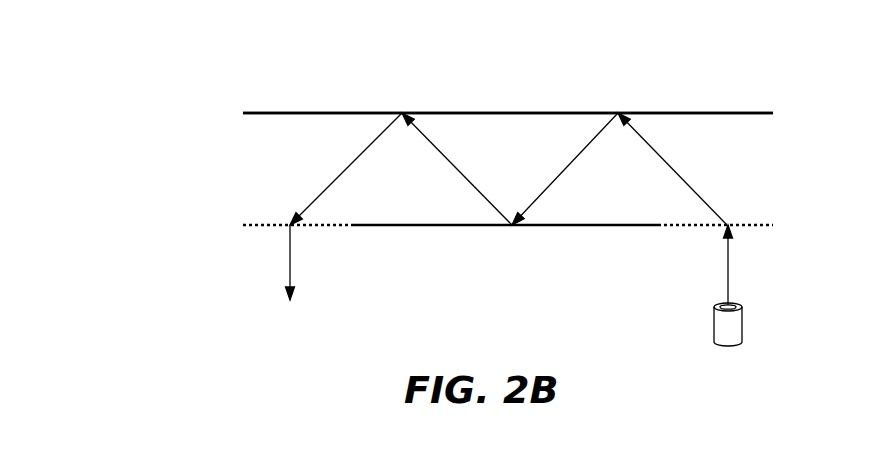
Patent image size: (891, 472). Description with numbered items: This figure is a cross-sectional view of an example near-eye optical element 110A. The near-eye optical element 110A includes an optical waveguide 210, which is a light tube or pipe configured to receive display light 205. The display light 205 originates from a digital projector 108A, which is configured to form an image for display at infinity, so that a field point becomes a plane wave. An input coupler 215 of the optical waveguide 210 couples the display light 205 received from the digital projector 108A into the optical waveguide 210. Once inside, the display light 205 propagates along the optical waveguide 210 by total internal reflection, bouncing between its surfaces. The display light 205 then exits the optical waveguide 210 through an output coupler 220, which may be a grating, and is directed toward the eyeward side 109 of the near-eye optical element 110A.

The near-eye optical element 110A is at (739, 91).
The optical waveguide 210 is at (504, 125).
The eyeward side 109 is at (346, 89).
The output coupler 220 is at (260, 223).
The input coupler 215 is at (752, 224).
The display light 205 is at (290, 247).
The digital projector 108A is at (742, 325).